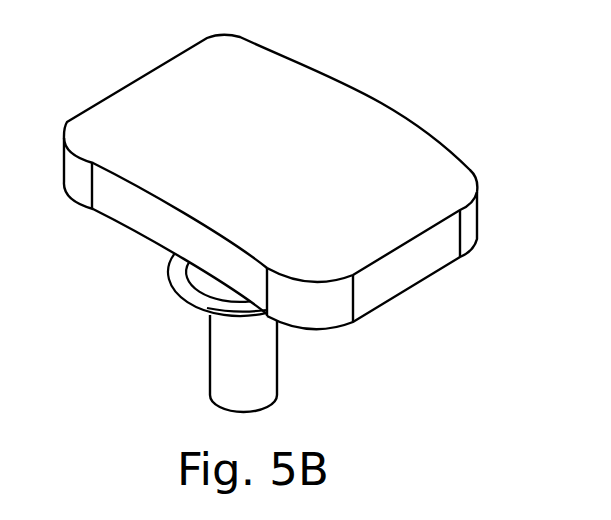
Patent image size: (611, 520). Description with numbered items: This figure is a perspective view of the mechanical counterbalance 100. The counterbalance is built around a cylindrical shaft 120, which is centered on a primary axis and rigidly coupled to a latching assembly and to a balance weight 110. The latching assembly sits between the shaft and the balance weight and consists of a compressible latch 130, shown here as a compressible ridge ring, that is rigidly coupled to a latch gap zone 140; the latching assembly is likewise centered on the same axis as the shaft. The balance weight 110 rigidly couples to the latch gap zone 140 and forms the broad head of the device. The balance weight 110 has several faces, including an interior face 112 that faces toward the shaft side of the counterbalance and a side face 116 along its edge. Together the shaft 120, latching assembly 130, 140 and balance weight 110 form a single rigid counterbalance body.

The mechanical counterbalance 100 is at (506, 35).
The balance weight 110 is at (353, 113).
The interior face 112 is at (123, 207).
The side face 116 is at (408, 272).
The cylindrical shaft 120 is at (280, 377).
The compressible latch 130 is at (191, 305).
The latch gap zone 140 is at (177, 292).